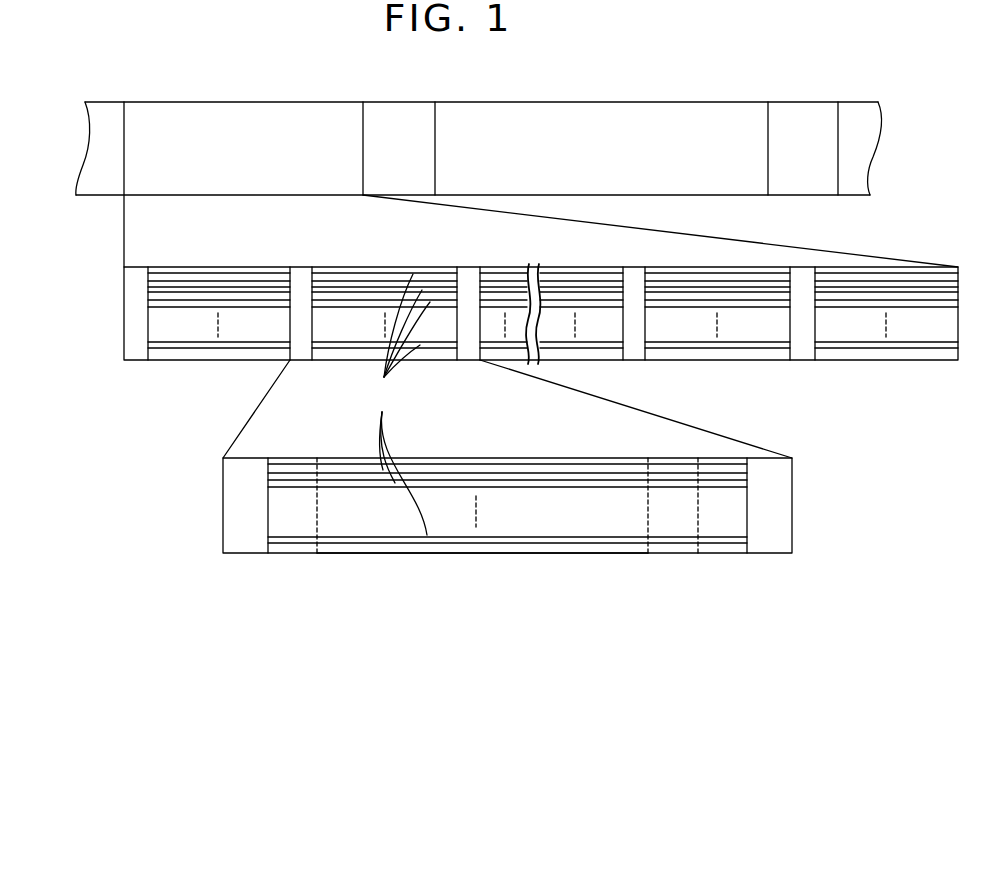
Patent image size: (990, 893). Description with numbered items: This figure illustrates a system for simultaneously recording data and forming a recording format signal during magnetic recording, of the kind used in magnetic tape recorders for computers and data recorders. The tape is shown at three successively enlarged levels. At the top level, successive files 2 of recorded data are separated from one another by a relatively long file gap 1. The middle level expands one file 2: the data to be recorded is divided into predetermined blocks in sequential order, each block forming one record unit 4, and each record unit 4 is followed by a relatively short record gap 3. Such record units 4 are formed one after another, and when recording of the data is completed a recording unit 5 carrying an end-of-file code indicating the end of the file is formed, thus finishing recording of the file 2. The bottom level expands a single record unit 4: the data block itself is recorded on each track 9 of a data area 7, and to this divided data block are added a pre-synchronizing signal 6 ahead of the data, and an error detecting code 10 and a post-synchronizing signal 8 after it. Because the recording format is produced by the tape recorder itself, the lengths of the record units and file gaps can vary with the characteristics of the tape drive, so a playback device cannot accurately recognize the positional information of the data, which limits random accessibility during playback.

The file gap 1 is at (104, 110).
The file 2 is at (257, 108).
The record gap 3 is at (138, 273).
The record unit 4 is at (214, 270).
The recording unit 5 is at (893, 357).
The pre-synchronizing signal 6 is at (268, 554).
The data area 7 is at (317, 554).
The post-synchronizing signal 8 is at (747, 554).
The track 9 is at (403, 404).
The error detecting code 10 is at (648, 554).